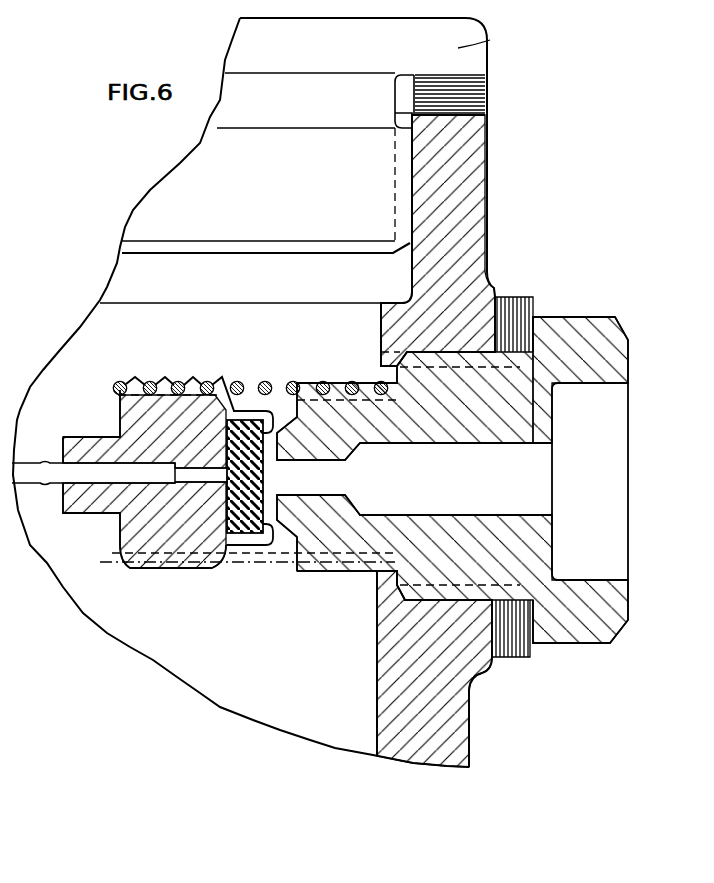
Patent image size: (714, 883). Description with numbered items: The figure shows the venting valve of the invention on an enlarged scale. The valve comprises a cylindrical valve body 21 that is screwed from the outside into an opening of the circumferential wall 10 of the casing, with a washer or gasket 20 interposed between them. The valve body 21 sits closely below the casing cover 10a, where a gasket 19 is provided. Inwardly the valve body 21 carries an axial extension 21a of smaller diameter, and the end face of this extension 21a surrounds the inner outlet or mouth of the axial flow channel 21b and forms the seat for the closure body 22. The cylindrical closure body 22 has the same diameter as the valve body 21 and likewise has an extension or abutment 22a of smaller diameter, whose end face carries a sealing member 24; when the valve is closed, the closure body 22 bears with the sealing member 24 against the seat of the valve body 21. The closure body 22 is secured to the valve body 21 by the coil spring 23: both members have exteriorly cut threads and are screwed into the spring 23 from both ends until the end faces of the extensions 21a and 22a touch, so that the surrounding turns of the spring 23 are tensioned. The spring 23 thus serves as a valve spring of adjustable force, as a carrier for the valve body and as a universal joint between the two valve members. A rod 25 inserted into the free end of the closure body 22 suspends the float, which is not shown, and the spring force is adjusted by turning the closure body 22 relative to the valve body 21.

The circumferential wall 10 is at (470, 183).
The casing cover 10a is at (497, 39).
The gasket 19 is at (473, 100).
The washer or gasket 20 is at (517, 307).
The valve body 21 is at (440, 588).
The axial extension 21a is at (286, 508).
The axial flow channel 21b is at (383, 503).
The closure body 22 is at (178, 525).
The extension or abutment 22a is at (263, 545).
The valve spring 23 is at (120, 382).
The sealing member 24 is at (242, 530).
The rod 25 is at (48, 470).